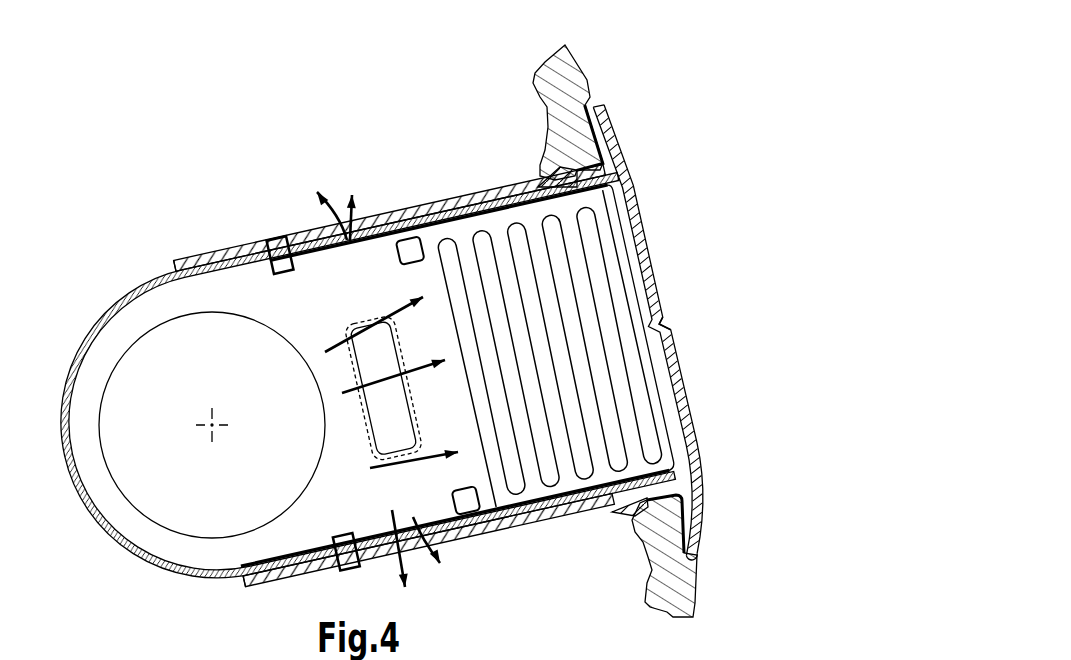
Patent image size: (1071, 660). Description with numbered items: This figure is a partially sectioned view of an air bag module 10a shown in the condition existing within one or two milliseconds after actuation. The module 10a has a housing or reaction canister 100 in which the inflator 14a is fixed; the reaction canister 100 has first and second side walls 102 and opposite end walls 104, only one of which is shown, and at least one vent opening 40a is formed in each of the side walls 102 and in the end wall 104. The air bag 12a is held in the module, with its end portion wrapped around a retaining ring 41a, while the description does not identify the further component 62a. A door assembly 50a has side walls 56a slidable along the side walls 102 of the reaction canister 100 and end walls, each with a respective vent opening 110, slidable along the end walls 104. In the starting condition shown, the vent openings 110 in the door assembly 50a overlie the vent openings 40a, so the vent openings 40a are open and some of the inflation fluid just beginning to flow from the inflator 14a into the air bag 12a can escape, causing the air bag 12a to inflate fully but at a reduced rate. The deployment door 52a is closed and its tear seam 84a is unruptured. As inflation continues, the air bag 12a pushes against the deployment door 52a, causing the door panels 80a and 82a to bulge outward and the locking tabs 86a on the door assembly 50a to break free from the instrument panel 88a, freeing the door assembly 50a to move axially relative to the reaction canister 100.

The air bag module 10a is at (268, 122).
The reaction canister 100 is at (136, 292).
The inflator 14a is at (127, 343).
The side walls 56a is at (193, 267).
The side walls 102 is at (248, 272).
The end walls 104 is at (463, 467).
The fastener clamp 62a is at (275, 240).
The retaining ring 41a is at (408, 243).
The vent opening 110 is at (363, 227).
The vent opening 40a is at (300, 410).
The air bag 12a is at (618, 287).
The deployment door 52a is at (680, 358).
The door panel 82a is at (690, 405).
The door panel 80a is at (655, 215).
The tear seam 84a is at (672, 322).
The instrument panel 88a is at (577, 78).
The locking tabs 86a is at (545, 168).
The door assembly 50a is at (727, 474).